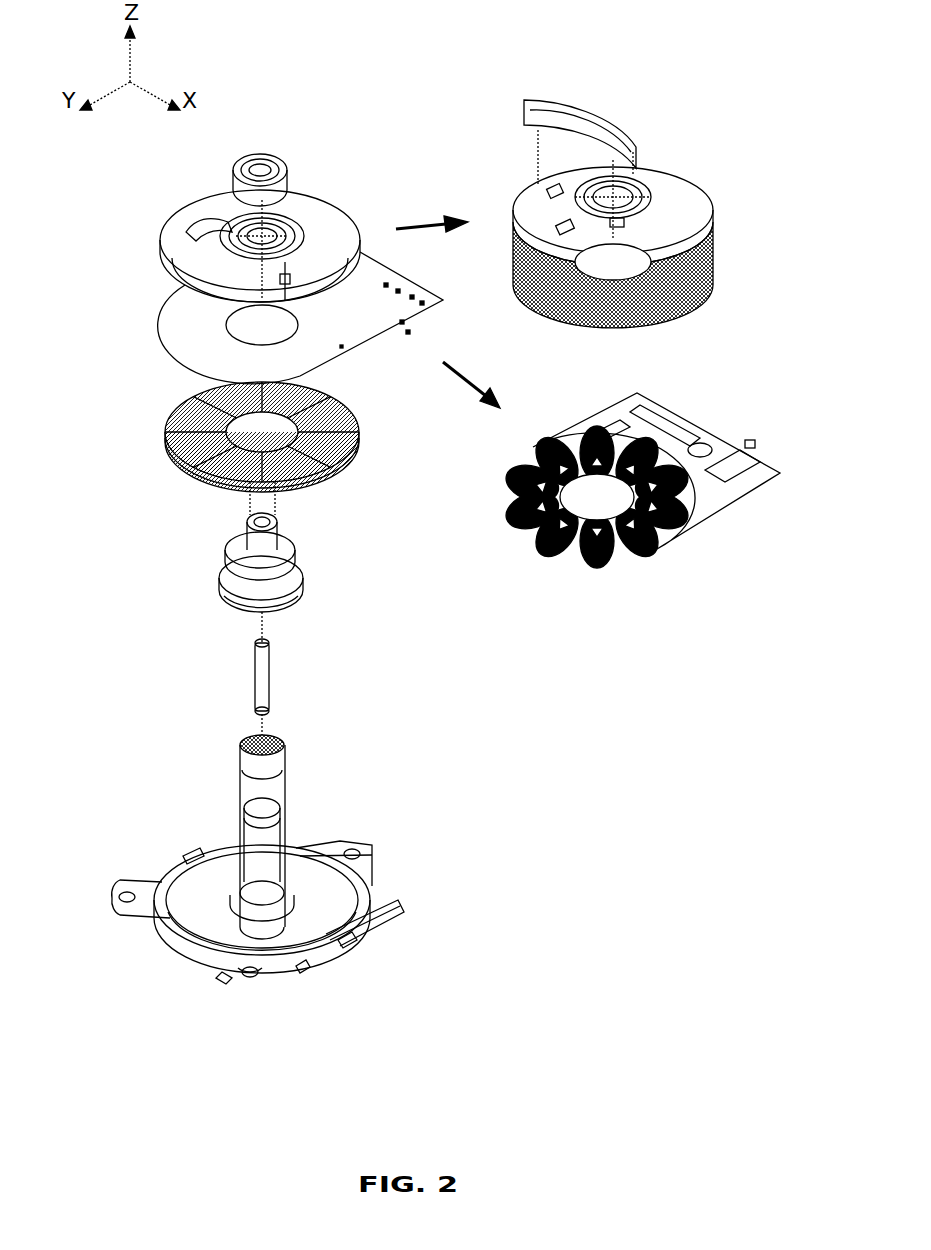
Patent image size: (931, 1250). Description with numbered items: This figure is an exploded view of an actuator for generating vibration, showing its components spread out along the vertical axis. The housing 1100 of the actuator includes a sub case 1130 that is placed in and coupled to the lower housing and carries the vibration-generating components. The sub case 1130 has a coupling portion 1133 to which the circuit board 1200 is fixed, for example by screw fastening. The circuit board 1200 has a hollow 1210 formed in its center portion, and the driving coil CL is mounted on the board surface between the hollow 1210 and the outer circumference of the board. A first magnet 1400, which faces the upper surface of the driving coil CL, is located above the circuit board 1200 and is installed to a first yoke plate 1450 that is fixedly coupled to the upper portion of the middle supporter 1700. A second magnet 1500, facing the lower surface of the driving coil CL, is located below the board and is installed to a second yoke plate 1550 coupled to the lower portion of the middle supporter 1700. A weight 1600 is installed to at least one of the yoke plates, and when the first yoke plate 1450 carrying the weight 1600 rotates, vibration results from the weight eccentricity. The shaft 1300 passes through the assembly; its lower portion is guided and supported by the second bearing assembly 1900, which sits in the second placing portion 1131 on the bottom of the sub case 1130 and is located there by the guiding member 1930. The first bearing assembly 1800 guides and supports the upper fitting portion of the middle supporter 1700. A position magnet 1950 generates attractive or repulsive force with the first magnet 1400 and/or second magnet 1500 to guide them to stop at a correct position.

The housing 1100 is at (245, 891).
The sub case 1130 is at (245, 891).
The second placing portion 1131 is at (234, 918).
The coupling portion 1133 is at (358, 848).
The circuit board 1200 is at (434, 419).
The hollow 1210 is at (590, 480).
The driving coil CL is at (655, 540).
The shaft 1300 is at (254, 671).
The first magnet 1400 is at (712, 280).
The first yoke plate 1450 is at (218, 208).
The second magnet 1500 is at (223, 448).
The second yoke plate 1550 is at (180, 470).
The weight 1600 is at (192, 252).
The middle supporter 1700 is at (294, 568).
The first bearing assembly 1800 is at (296, 190).
The second bearing assembly 1900 is at (223, 837).
The guiding member 1930 is at (242, 822).
The position magnet 1950 is at (190, 858).